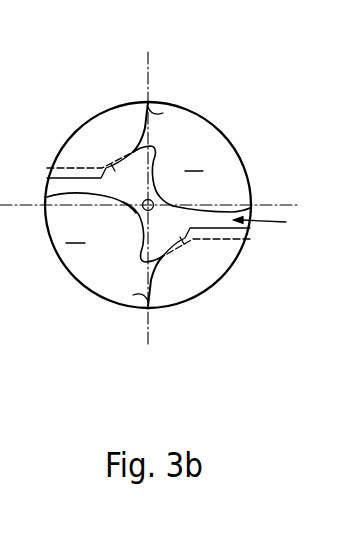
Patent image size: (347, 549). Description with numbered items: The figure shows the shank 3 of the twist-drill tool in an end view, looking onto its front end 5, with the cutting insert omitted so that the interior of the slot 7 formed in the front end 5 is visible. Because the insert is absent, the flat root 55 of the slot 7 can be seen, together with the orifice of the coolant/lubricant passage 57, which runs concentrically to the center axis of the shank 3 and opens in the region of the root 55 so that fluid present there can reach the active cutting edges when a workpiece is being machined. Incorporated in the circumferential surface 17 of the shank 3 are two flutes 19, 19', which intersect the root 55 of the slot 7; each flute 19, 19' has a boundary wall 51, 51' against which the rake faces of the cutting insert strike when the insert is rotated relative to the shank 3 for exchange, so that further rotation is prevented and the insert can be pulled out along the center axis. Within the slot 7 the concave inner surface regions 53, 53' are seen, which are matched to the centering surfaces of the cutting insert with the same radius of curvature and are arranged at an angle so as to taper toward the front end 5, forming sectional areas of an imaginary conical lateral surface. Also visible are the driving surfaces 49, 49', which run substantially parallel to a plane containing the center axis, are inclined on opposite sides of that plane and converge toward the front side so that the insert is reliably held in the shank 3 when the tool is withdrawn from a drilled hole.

The shank 3 is at (158, 195).
The front end 5 is at (103, 148).
The slot 7 is at (264, 222).
The circumferential surface 17 is at (240, 146).
The flute 19 is at (194, 162).
The flute 19' is at (75, 234).
The driving surface 49 is at (226, 284).
The driving surface 49' is at (74, 152).
The boundary wall 51 is at (181, 83).
The boundary wall 51' is at (132, 312).
The inner surface region 53 is at (185, 286).
The inner surface region 53' is at (202, 142).
The root 55 is at (142, 194).
The coolant/lubricant passage 57 is at (140, 212).